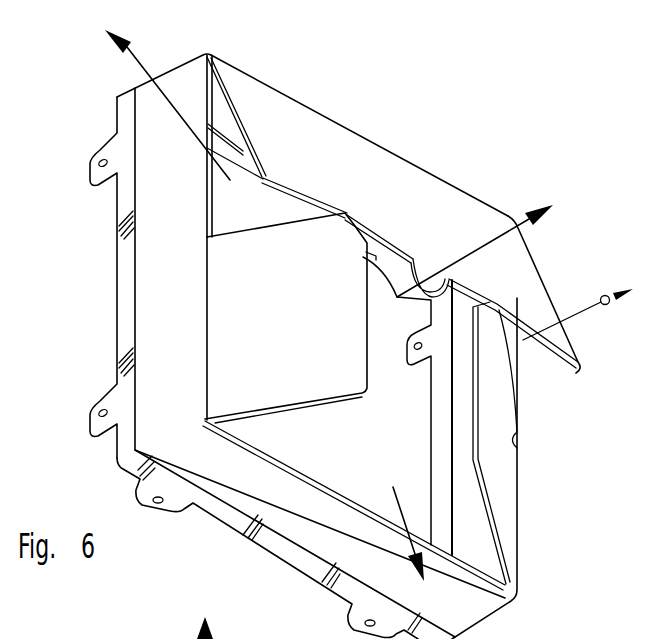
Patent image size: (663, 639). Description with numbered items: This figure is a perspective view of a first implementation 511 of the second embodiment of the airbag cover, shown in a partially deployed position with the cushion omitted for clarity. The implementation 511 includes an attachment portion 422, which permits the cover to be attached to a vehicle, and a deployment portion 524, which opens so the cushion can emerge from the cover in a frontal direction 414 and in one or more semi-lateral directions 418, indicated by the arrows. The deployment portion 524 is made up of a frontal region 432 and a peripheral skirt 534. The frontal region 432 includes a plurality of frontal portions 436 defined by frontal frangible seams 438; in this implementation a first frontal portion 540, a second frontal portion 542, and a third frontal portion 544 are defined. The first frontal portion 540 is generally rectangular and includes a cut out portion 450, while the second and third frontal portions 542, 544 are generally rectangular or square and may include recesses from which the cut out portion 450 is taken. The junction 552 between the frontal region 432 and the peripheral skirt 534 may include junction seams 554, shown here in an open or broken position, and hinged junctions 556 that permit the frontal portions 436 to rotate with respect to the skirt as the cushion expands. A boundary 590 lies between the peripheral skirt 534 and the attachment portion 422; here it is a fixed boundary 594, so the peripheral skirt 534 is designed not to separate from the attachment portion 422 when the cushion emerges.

The first implementation 511 is at (46, 113).
The deployment portion 524 is at (177, 66).
The attachment portion 422 is at (117, 95).
The semi-lateral direction 418 is at (170, 108).
The junction seam 554 is at (213, 121).
The first frontal portion 540 is at (334, 124).
The frontal region 432 is at (417, 167).
The frontal frangible seam 438 is at (287, 222).
The cut out portion 450 is at (430, 272).
The frontal direction 414 is at (478, 249).
The fixed boundary 594 is at (137, 262).
The second frontal portion 542 is at (230, 300).
The junction 552 is at (206, 335).
The hinged junction 556 is at (206, 372).
The third frontal portion 544 is at (518, 455).
The frontal portion 436 is at (518, 489).
The peripheral skirt 534 is at (210, 483).
The boundary 590 is at (260, 548).